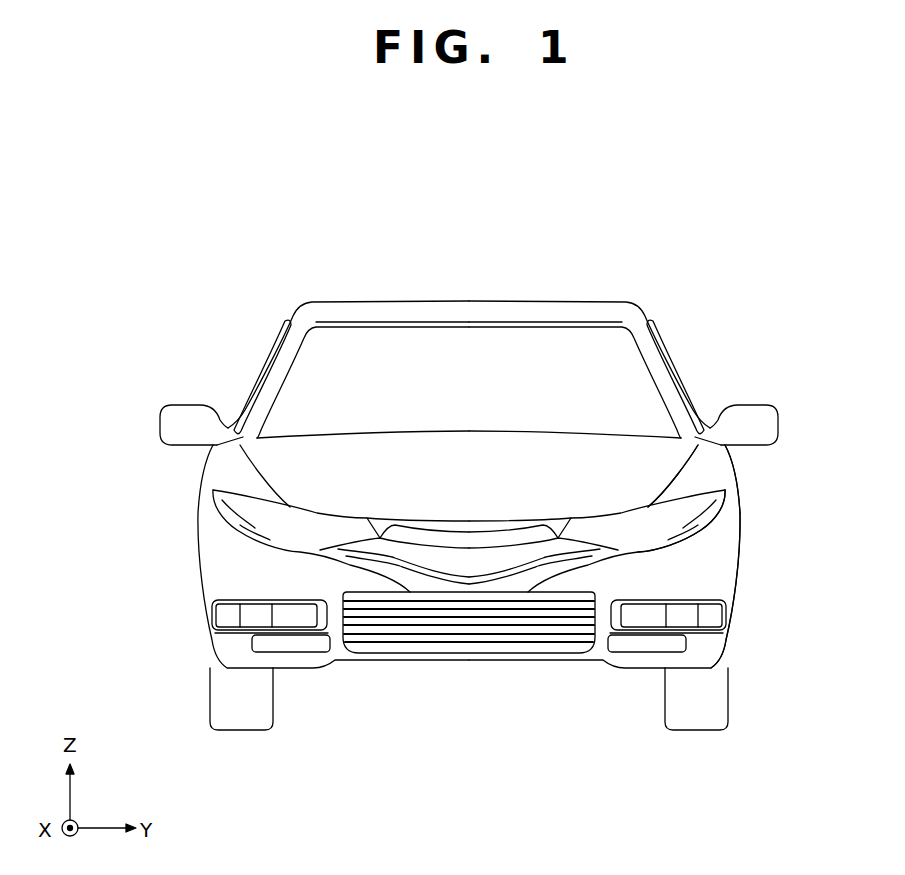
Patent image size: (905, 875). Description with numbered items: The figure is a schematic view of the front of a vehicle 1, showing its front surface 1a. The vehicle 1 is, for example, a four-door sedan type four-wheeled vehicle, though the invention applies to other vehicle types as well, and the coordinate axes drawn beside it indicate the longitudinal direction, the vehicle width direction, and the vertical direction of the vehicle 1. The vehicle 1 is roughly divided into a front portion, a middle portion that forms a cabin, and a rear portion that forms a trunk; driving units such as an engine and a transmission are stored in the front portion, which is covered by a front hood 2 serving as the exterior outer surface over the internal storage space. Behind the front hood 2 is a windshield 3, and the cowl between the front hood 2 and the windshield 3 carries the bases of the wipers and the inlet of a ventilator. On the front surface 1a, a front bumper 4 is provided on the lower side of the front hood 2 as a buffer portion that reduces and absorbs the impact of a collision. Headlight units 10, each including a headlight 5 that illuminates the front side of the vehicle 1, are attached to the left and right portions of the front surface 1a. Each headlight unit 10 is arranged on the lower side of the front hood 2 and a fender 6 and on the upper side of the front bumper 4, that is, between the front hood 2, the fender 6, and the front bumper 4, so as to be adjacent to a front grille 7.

The vehicle 1 is at (616, 205).
The front surface 1a is at (173, 591).
The front hood 2 is at (613, 460).
The windshield 3 is at (613, 340).
The front bumper 4 is at (733, 573).
The headlight 5 is at (713, 504).
The fender 6 is at (713, 468).
The front grille 7 is at (467, 528).
The headlight unit 10 is at (712, 531).